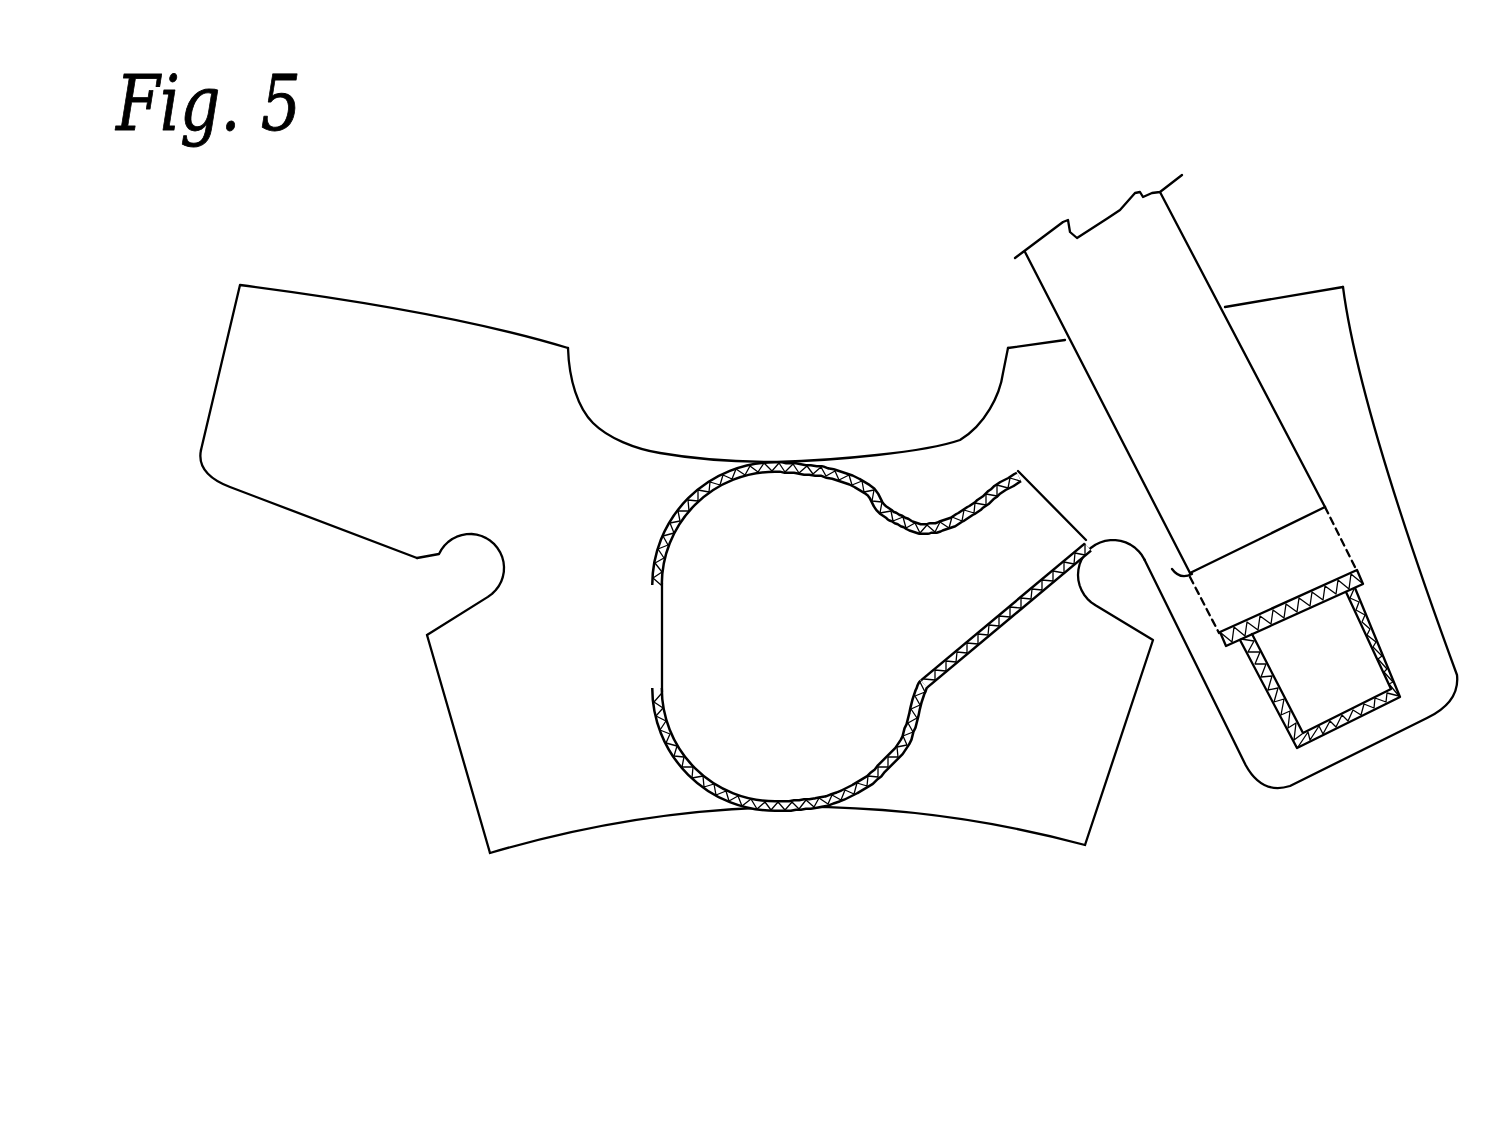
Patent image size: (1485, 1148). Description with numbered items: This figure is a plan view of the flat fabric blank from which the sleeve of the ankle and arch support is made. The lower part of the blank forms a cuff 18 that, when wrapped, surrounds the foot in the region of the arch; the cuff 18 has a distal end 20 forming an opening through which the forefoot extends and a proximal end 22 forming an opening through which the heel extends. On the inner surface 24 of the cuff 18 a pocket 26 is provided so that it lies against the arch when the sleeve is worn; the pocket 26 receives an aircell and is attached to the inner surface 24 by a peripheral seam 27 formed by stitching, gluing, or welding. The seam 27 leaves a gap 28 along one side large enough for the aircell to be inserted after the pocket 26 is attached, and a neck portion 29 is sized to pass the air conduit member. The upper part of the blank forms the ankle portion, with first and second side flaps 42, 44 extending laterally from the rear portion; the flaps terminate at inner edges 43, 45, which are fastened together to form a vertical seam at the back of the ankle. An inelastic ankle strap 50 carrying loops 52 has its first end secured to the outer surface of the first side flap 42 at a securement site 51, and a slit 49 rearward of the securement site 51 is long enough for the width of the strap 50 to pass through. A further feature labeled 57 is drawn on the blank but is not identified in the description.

The cuff 18 is at (1123, 747).
The distal end 20 is at (600, 830).
The proximal end 22 is at (580, 397).
The inner surface 24 is at (574, 757).
The pocket 26 is at (793, 757).
The peripheral seam 27 is at (910, 740).
The gap 28 is at (657, 620).
The neck portion 29 is at (1004, 576).
The first side flap 42 is at (1348, 443).
The inner edge 43 is at (1305, 288).
The second side flap 44 is at (367, 493).
The inner edge 45 is at (386, 305).
The slit 49 is at (1280, 523).
The ankle strap 50 is at (1180, 228).
The securement site 51 is at (1363, 578).
The loops 52 is at (1161, 357).
The corner 57 is at (245, 494).